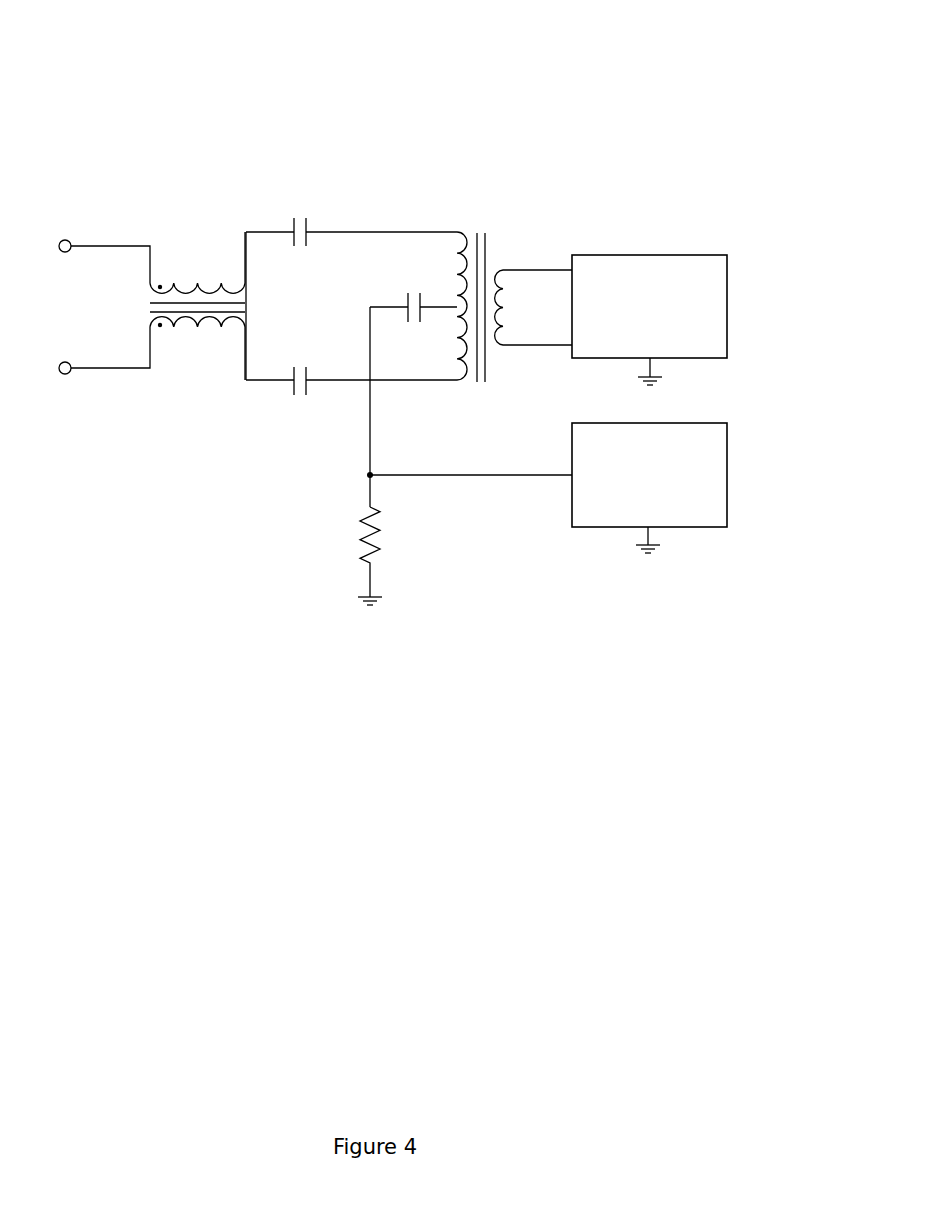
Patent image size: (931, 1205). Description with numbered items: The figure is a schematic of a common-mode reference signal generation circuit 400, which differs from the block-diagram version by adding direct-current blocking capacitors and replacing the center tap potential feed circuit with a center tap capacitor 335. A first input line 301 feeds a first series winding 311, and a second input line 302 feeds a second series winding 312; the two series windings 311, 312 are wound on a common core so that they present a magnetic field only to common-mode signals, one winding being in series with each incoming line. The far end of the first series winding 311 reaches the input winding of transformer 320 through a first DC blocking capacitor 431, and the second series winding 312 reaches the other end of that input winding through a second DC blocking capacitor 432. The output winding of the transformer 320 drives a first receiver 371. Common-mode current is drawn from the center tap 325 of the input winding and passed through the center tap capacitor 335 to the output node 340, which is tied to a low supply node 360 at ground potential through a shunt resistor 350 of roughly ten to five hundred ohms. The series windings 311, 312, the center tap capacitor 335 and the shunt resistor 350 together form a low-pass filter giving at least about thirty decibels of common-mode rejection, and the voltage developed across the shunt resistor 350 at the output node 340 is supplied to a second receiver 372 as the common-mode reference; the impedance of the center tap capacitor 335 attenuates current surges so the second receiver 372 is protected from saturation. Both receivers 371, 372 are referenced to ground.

The common-mode reference signal generation circuit 400 is at (302, 72).
The first input line 301 is at (71, 241).
The second input line 302 is at (72, 373).
The first series winding 311 is at (196, 281).
The second series winding 312 is at (200, 332).
The transformer 320 is at (480, 230).
The center tap 325 is at (457, 310).
The tap capacitor 335 is at (393, 306).
The output node 340 is at (370, 472).
The shunt resistor 350 is at (363, 528).
The low supply node 360 is at (370, 595).
The first receiver 371 is at (727, 305).
The second receiver 372 is at (727, 475).
The first DC blocking capacitor 431 is at (287, 229).
The second DC blocking capacitor 432 is at (287, 383).